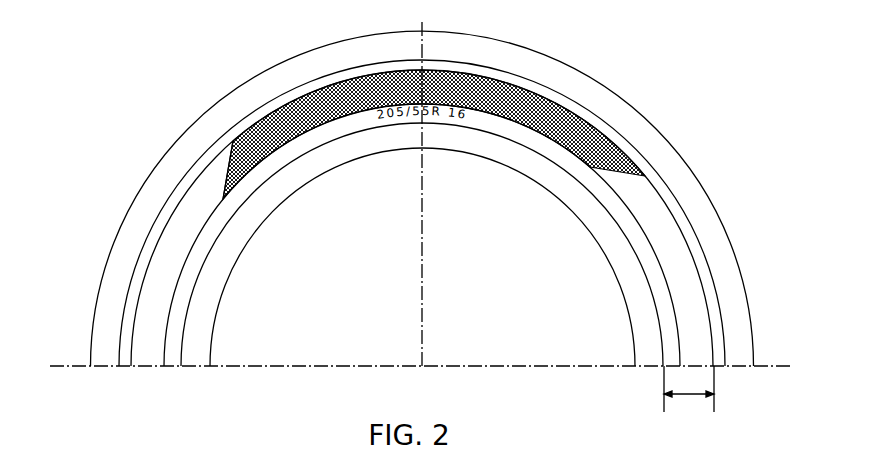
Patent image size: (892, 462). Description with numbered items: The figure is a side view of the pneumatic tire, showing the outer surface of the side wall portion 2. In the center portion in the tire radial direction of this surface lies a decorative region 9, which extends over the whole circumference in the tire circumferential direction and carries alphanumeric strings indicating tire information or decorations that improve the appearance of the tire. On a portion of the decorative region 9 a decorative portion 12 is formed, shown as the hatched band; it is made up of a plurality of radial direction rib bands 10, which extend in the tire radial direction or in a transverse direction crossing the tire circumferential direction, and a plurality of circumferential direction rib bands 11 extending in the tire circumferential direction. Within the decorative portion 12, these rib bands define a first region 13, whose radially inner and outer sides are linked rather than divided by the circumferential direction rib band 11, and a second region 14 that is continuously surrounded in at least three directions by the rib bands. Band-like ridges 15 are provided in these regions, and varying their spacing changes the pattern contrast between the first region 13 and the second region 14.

The side wall portion 2 is at (718, 192).
The decorative region 9 is at (690, 395).
The radial direction rib band 10 is at (538, 98).
The circumferential direction rib band 11 is at (580, 114).
The decorative portion 12 is at (478, 67).
The first region 13 is at (373, 78).
The second region 14 is at (398, 76).
The ridge 15 is at (306, 99).